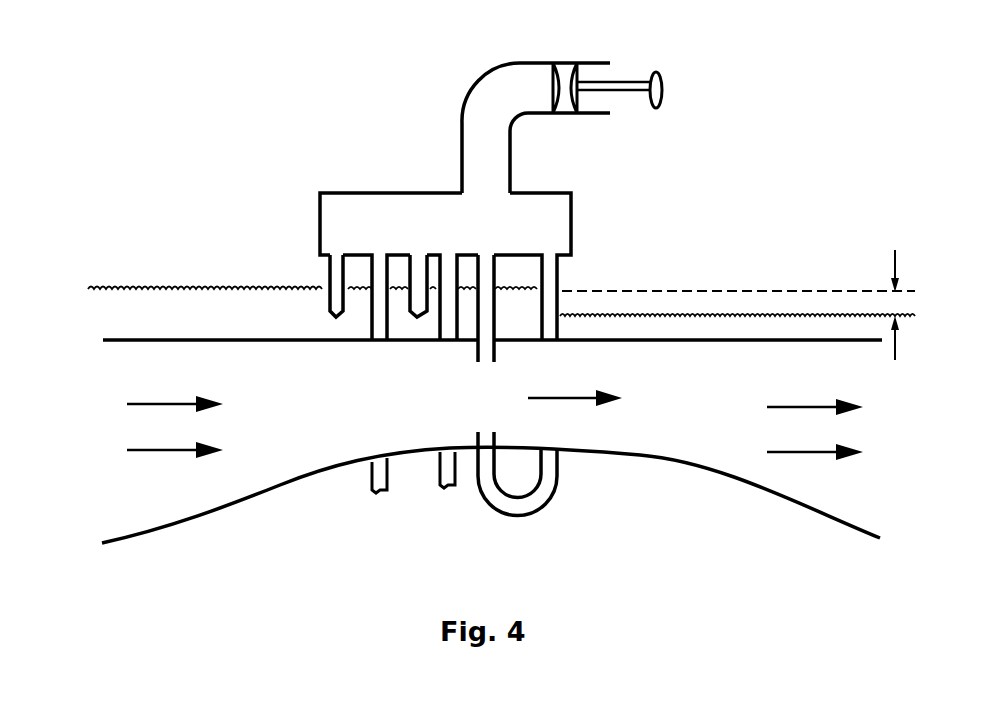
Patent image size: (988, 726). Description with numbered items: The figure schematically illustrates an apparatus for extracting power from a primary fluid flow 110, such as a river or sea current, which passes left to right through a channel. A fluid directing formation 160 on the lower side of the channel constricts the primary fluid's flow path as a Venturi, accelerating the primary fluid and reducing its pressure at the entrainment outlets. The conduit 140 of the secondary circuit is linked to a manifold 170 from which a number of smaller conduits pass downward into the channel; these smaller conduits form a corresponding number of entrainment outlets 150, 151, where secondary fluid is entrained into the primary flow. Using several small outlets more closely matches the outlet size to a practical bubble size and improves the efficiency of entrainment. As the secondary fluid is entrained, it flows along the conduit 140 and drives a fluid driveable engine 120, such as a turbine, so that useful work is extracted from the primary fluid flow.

The fluid flow 110 is at (470, 350).
The fluid driveable engine 120 is at (568, 70).
The conduit 140 is at (473, 78).
The entrainment outlet 150 is at (460, 423).
The entrainment outlet 151 is at (380, 331).
The fluid directing formation 160 is at (293, 482).
The manifold 170 is at (552, 215).